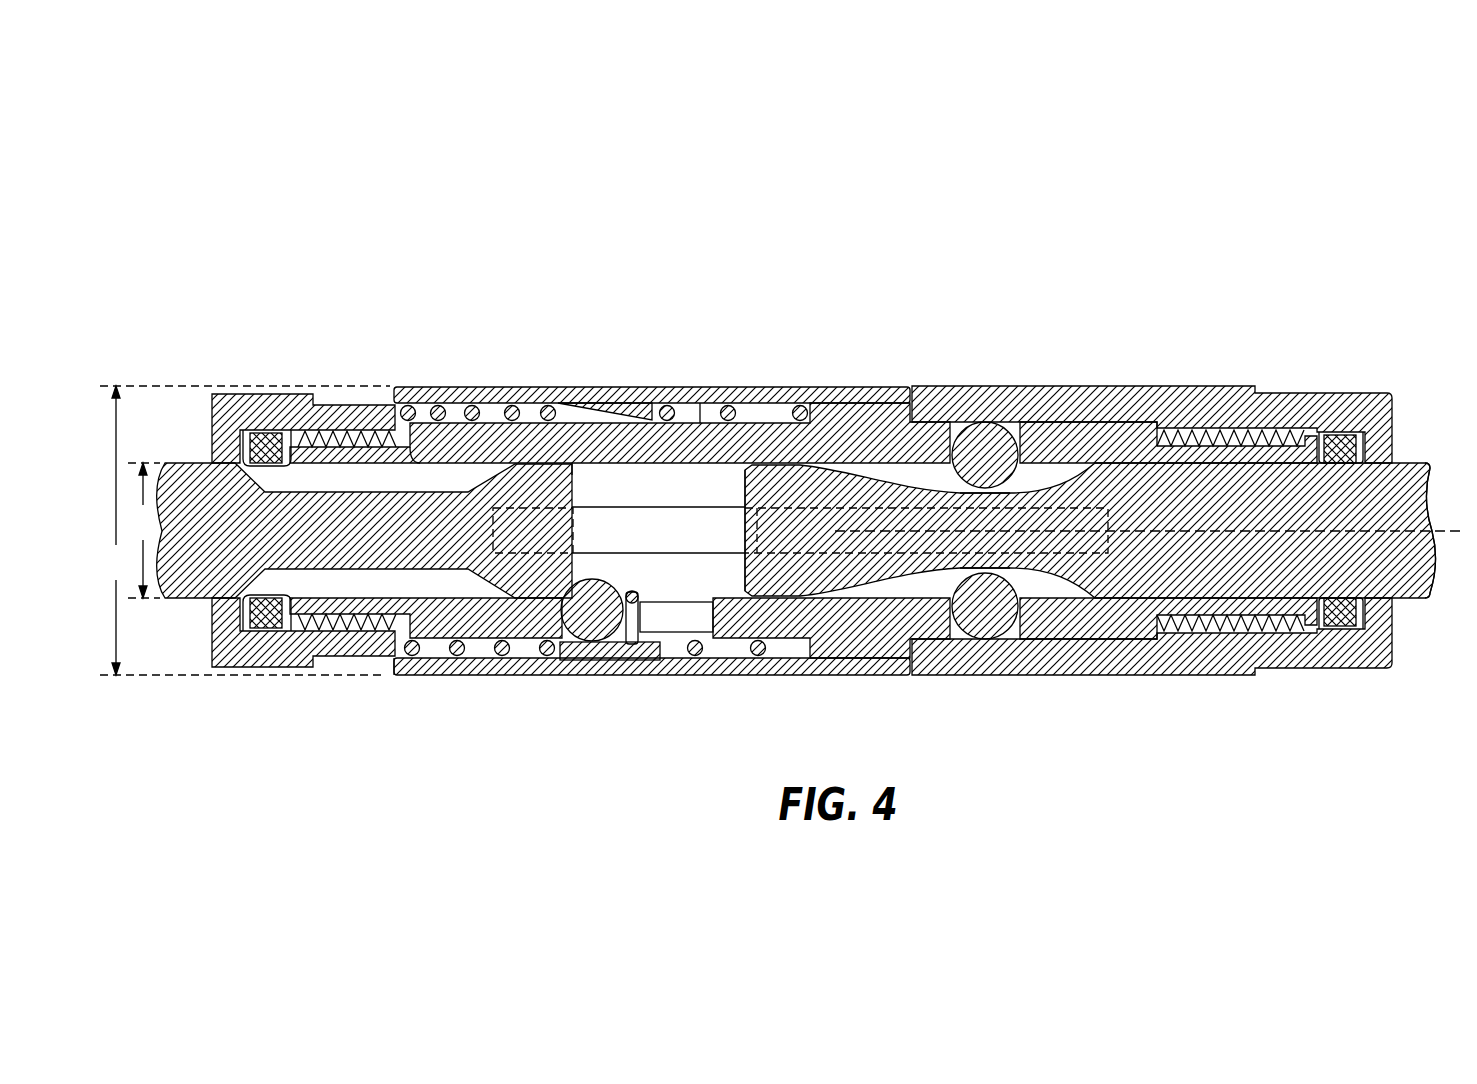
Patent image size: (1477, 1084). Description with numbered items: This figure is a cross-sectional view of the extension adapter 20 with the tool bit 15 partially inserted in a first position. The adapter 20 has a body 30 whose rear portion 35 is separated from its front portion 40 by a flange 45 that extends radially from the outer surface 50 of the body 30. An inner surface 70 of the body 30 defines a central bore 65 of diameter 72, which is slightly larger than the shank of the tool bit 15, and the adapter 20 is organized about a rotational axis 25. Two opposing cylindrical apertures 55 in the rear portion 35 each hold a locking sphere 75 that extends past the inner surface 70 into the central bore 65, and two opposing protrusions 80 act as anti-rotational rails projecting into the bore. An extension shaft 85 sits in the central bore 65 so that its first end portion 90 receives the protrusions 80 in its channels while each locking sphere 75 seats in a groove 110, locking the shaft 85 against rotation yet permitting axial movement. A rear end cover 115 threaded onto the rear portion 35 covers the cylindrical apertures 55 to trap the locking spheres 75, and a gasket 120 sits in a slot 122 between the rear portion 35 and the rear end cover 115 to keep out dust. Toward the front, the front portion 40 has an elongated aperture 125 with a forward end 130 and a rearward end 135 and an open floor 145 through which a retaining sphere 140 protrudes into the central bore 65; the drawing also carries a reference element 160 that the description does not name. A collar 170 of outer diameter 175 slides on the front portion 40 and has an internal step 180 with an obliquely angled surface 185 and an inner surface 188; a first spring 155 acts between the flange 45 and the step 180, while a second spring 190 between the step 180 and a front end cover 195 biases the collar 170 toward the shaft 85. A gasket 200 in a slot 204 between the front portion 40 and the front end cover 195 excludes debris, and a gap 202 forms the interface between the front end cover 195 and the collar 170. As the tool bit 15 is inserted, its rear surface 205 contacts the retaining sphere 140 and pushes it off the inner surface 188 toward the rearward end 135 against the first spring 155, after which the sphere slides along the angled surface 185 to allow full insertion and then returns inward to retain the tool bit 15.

The tool bit 15 is at (350, 545).
The adapter 20 is at (1105, 238).
The rotational axis 25 is at (1443, 531).
The body 30 is at (1118, 440).
The rear portion 35 is at (1047, 316).
The front portion 40 is at (443, 346).
The flange 45 is at (862, 405).
The outer surface 50 is at (710, 410).
The cylindrical aperture 55 is at (1035, 488).
The central bore 65 is at (748, 470).
The inner surface 70 is at (408, 466).
The diameter 72 is at (144, 530).
The locking sphere 75 is at (983, 437).
The protrusion 80 is at (627, 533).
The shaft 85 is at (1405, 470).
The first end portion 90 is at (1134, 569).
The groove 110 is at (1060, 470).
The rear end cover 115 is at (1208, 385).
The gasket 120 is at (1345, 440).
The slot 122 is at (1360, 630).
The elongated aperture 125 is at (678, 615).
The forward end 130 is at (565, 612).
The rearward end 135 is at (705, 645).
The retaining sphere 140 is at (595, 645).
The open floor 145 is at (800, 655).
The first spring 155 is at (712, 485).
The pin 160 is at (598, 641).
The collar 170 is at (512, 410).
The outer diameter 175 is at (243, 530).
The step 180 is at (610, 413).
The angled surface 185 is at (633, 643).
The inner surface 188 is at (560, 619).
The second spring 190 is at (420, 665).
The front end cover 195 is at (345, 640).
The gasket 200 is at (258, 603).
The gap 202 is at (391, 381).
The slot 204 is at (232, 600).
The rear surface 205 is at (580, 465).